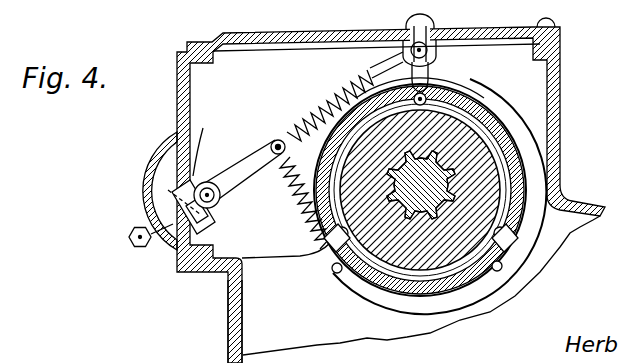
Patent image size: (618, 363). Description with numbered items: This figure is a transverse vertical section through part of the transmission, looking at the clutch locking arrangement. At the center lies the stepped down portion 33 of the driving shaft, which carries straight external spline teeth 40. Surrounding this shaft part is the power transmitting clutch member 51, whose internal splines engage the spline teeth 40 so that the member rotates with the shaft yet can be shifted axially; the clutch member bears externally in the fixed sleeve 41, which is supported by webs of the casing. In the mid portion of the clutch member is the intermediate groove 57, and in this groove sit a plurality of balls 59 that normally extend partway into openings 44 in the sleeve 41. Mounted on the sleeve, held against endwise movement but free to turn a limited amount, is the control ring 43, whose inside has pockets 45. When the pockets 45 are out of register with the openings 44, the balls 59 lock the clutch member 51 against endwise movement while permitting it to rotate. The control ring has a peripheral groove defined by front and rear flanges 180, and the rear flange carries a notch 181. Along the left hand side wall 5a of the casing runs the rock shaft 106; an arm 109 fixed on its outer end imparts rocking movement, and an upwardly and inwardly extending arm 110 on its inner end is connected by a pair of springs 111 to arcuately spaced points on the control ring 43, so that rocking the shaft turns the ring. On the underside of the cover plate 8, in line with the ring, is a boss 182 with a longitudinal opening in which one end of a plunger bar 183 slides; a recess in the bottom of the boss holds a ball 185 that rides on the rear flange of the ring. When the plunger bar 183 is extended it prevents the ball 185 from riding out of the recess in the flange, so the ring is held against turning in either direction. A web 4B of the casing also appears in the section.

The cover plate 8 is at (345, 30).
The left hand side wall 5a is at (558, 160).
The housing web 4B is at (228, 300).
The arm 109 is at (150, 228).
The arm 110 is at (250, 170).
The rock shaft 106 is at (220, 198).
The springs 111 is at (318, 107).
The stepped down portion 33 is at (420, 190).
The spline teeth 40 is at (432, 157).
The clutch member 51 is at (396, 128).
The intermediate groove 57 is at (492, 165).
The openings 44 is at (468, 92).
The control ring 43 is at (501, 93).
The flanges 180 is at (518, 113).
The balls 59 is at (419, 106).
The pockets 45 is at (430, 96).
The sleeve 41 is at (508, 236).
The plunger bar 183 is at (432, 40).
The boss 182 is at (403, 54).
The ball 185 is at (372, 70).
The notch 181 is at (428, 84).